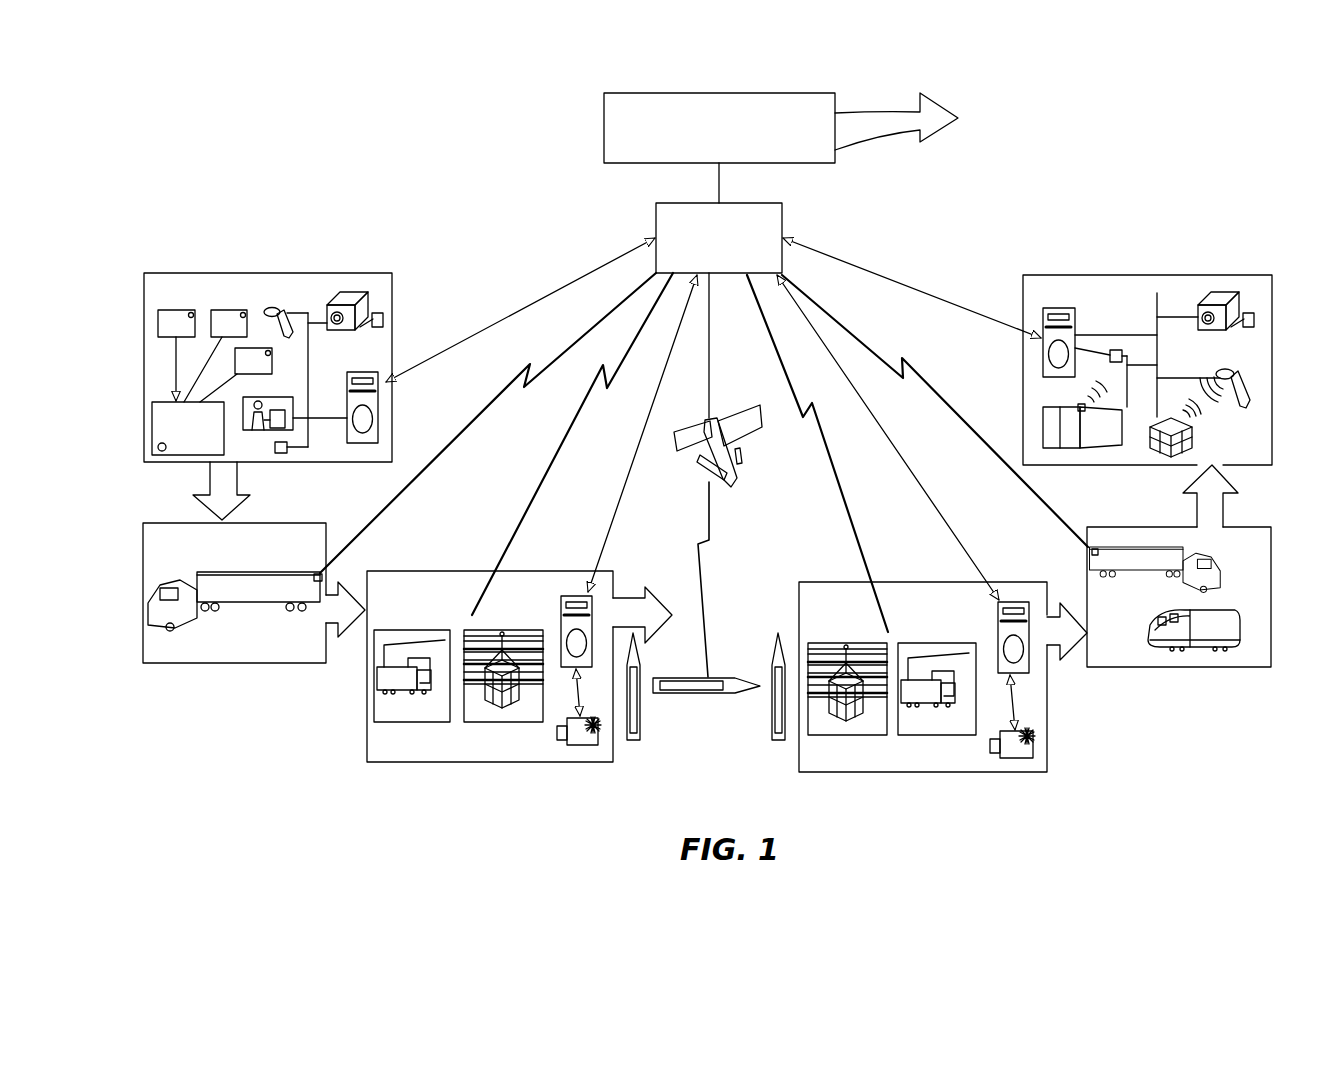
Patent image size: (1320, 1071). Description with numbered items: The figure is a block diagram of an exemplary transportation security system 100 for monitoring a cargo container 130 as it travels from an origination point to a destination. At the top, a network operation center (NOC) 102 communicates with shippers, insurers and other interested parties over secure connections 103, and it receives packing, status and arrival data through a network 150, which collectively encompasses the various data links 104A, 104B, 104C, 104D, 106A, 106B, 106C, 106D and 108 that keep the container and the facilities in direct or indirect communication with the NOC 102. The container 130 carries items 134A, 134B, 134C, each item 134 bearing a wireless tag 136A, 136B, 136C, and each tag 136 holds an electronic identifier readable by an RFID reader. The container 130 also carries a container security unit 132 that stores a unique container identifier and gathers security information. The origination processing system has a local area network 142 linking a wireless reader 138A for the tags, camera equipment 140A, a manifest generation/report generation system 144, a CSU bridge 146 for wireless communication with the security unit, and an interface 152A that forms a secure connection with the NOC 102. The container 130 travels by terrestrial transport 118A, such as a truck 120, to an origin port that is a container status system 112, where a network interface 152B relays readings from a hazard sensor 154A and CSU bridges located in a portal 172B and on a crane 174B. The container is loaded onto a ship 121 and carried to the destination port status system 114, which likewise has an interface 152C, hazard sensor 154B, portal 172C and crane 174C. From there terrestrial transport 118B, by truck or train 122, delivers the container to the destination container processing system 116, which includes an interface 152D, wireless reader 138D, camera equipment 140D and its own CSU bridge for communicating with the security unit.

The system 100 is at (1017, 208).
The network operation center (NOC) 102 is at (719, 128).
The secure connections 103 is at (896, 121).
The communications link 104A is at (523, 305).
The communications link 104B is at (603, 535).
The communications link 104C is at (938, 515).
The communications link 104D is at (887, 282).
The communications link 106A is at (463, 430).
The communications link 106B is at (520, 523).
The communications link 106C is at (862, 562).
The communications link 106D is at (882, 365).
The data link 108 is at (710, 535).
The container status system 112 is at (519, 666).
The container status system 114 is at (943, 677).
The container processing system 116 is at (1147, 370).
The terrestrial transport 118A is at (210, 643).
The terrestrial transport 118B is at (1117, 650).
The truck 120 is at (208, 578).
The ship 121 is at (735, 685).
The train 122 is at (1202, 633).
The cargo container 130 is at (1093, 470).
The container security unit (CSU) 132 is at (162, 453).
The item 134 is at (1172, 420).
The item 134A is at (173, 312).
The item 134B is at (226, 312).
The item 134C is at (250, 350).
The wireless tag 136 is at (1196, 433).
The wireless tag 136A is at (192, 312).
The wireless tag 136B is at (245, 313).
The wireless tag 136C is at (272, 352).
The wireless reader 138A is at (283, 310).
The wireless reader 138D is at (1238, 368).
The camera equipment 140A is at (348, 300).
The camera equipment 140D is at (1230, 295).
The local area network 142 is at (309, 372).
The manifest generation/report generation system 144 is at (250, 432).
The CSU bridge 146 is at (286, 453).
The network 150 is at (719, 238).
The interface 152A is at (375, 437).
The network interface 152B is at (561, 606).
The network interface 152C is at (998, 625).
The interface 152D is at (1075, 315).
The hazard sensor 154A is at (583, 745).
The hazard sensor 154B is at (1017, 755).
The portal 172B is at (414, 655).
The portal 172C is at (943, 672).
The crane 174B is at (528, 660).
The crane 174C is at (870, 675).